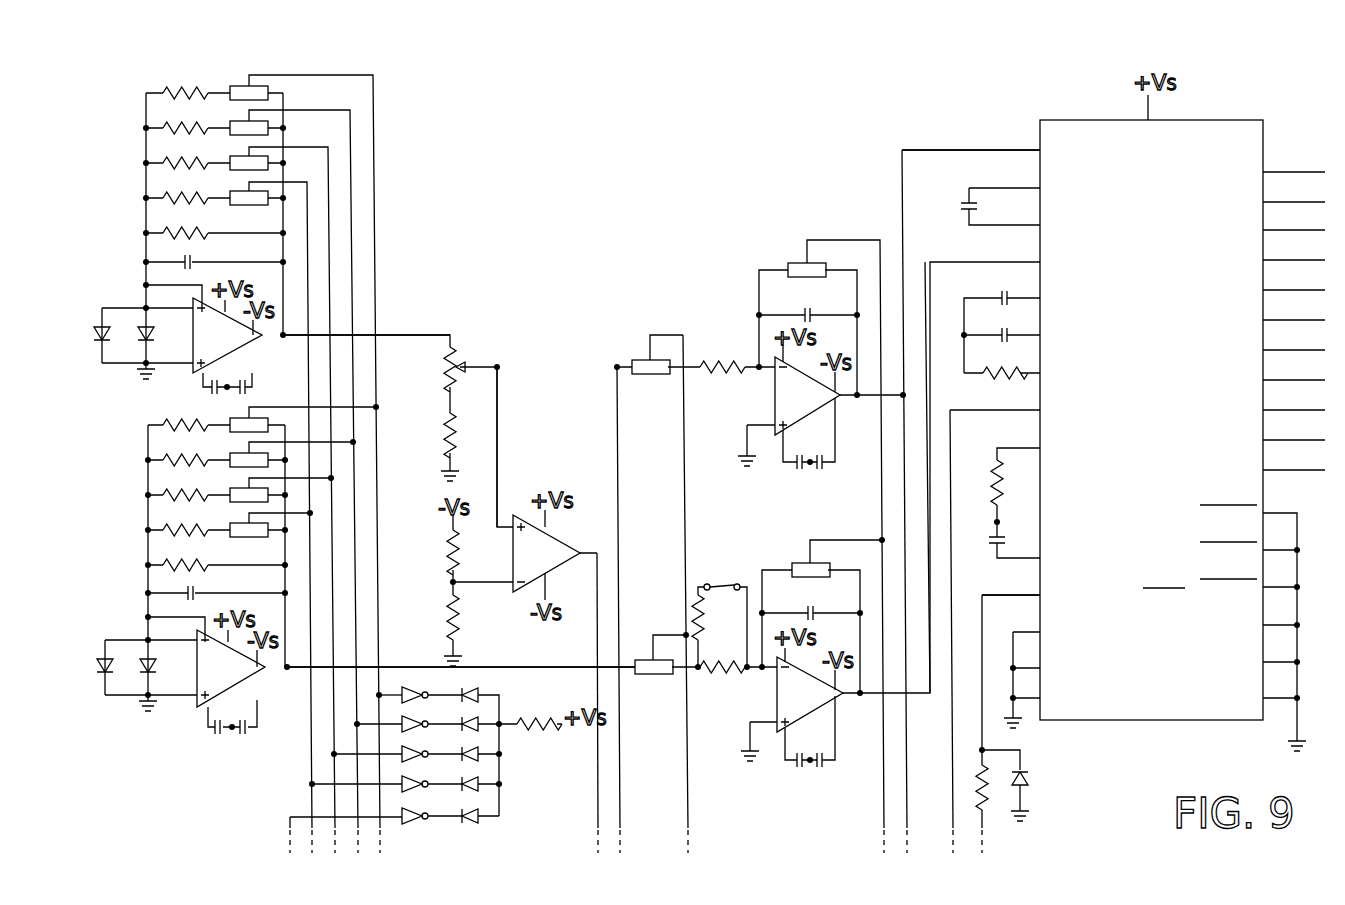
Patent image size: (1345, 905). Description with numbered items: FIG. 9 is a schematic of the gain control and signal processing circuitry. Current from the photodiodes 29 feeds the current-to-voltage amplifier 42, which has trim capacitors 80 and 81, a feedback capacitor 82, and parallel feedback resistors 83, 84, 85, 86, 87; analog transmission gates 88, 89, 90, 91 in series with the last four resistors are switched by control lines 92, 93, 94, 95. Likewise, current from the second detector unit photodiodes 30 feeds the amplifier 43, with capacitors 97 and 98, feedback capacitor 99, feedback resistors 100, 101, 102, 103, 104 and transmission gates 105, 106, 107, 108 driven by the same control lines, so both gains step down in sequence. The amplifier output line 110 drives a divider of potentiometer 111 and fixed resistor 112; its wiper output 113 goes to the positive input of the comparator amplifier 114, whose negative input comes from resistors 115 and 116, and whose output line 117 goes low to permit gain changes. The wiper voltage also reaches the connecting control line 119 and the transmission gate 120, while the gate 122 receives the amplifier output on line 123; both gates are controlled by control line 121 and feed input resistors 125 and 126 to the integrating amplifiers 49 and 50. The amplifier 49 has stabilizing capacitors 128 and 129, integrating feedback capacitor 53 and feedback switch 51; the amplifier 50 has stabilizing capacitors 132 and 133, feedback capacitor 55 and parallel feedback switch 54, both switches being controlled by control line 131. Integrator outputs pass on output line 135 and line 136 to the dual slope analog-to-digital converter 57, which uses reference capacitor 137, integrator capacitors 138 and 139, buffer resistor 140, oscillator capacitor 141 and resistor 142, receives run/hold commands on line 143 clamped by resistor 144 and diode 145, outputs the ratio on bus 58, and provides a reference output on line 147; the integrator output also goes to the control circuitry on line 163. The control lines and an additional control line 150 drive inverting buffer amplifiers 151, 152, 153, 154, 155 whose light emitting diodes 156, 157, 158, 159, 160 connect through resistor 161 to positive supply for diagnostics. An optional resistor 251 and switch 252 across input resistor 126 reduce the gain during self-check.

The photodiodes 29 is at (101, 325).
The second detector unit photodiodes 30 is at (107, 656).
The current-to-voltage amplifier 42 is at (262, 337).
The amplifier 43 is at (267, 669).
The integrating amplifier 49 is at (838, 400).
The integrating amplifier 50 is at (840, 700).
The feedback switch 51 is at (798, 261).
The integrating feedback capacitor 53 is at (812, 312).
The parallel feedback switch 54 is at (797, 561).
The integrating feedback capacitor 55 is at (808, 608).
The dual slope analog-to-digital converter 57 is at (1140, 722).
The bus 58 is at (1291, 163).
The trim capacitor 80 is at (212, 390).
The trim capacitor 81 is at (246, 386).
The feedback capacitor 82 is at (197, 261).
The feedback resistor 83 is at (177, 227).
The feedback resistor 84 is at (177, 192).
The feedback resistor 85 is at (177, 157).
The feedback resistor 86 is at (177, 122).
The feedback resistor 87 is at (170, 88).
The analog transmission gate 88 is at (255, 189).
The analog transmission gate 89 is at (255, 154).
The analog transmission gate 90 is at (255, 119).
The analog transmission gate 91 is at (237, 86).
The control line 92 is at (307, 202).
The control line 93 is at (329, 225).
The control line 94 is at (351, 245).
The control line 95 is at (375, 270).
The capacitor 97 is at (215, 735).
The capacitor 98 is at (240, 735).
The feedback capacitor 99 is at (199, 592).
The feedback resistor 100 is at (180, 562).
The feedback resistor 101 is at (180, 527).
The feedback resistor 102 is at (180, 492).
The feedback resistor 103 is at (180, 457).
The feedback resistor 104 is at (177, 422).
The transmission gate 105 is at (253, 528).
The transmission gate 106 is at (255, 493).
The transmission gate 107 is at (255, 458).
The transmission gate 108 is at (260, 418).
The output line 110 is at (442, 333).
The potentiometer 111 is at (447, 381).
The fixed resistor 112 is at (447, 445).
The wiper output 113 is at (478, 365).
The amplifier 114 is at (573, 545).
The resistor 115 is at (447, 555).
The resistor 116 is at (447, 618).
The output line 117 is at (594, 626).
The connecting control line 119 is at (617, 463).
The analog transmission gate 120 is at (643, 358).
The control line 121 is at (688, 540).
The transmission gate 122 is at (660, 675).
The line 123 is at (397, 665).
The input resistor 125 is at (707, 360).
The input resistor 126 is at (722, 677).
The stabilizing capacitor 128 is at (798, 468).
The stabilizing capacitor 129 is at (815, 468).
The control line 131 is at (835, 240).
The stabilizing capacitor 132 is at (797, 768).
The stabilizing capacitor 133 is at (818, 768).
The output line 135 is at (950, 148).
The line 136 is at (925, 445).
The reference capacitor 137 is at (963, 213).
The integrator capacitor 138 is at (1000, 293).
The integrator capacitor 139 is at (1000, 330).
The buffer resistor 140 is at (990, 375).
The oscillator capacitor 141 is at (988, 548).
The oscillator resistor 142 is at (990, 478).
The run/hold line 143 is at (1013, 598).
The resistor 144 is at (978, 770).
The diode 145 is at (1028, 782).
The output line 147 is at (950, 465).
The control line 150 is at (288, 816).
The inverting buffer amplifier 151 is at (413, 809).
The inverting buffer amplifier 152 is at (413, 777).
The inverting buffer amplifier 153 is at (413, 747).
The inverting buffer amplifier 154 is at (413, 717).
The inverting buffer amplifier 155 is at (413, 688).
The light emitting diode 156 is at (477, 821).
The light emitting diode 157 is at (477, 787).
The light emitting diode 158 is at (477, 757).
The light emitting diode 159 is at (477, 722).
The light emitting diode 160 is at (478, 690).
The resistor 161 is at (547, 728).
The line 163 is at (906, 796).
The optional resistor 251 is at (695, 625).
The switch 252 is at (703, 583).